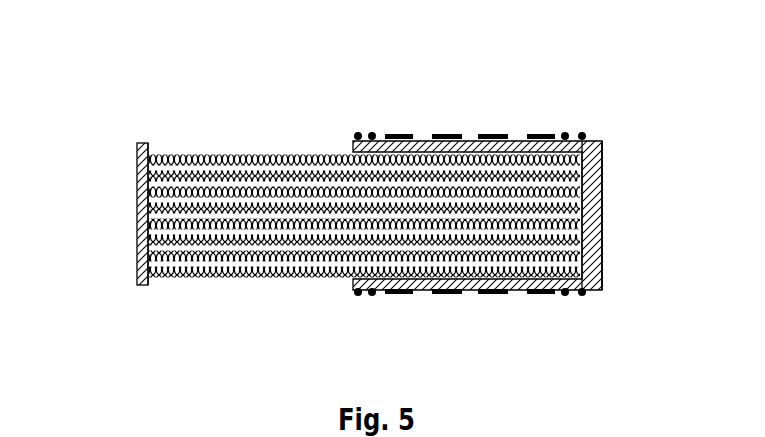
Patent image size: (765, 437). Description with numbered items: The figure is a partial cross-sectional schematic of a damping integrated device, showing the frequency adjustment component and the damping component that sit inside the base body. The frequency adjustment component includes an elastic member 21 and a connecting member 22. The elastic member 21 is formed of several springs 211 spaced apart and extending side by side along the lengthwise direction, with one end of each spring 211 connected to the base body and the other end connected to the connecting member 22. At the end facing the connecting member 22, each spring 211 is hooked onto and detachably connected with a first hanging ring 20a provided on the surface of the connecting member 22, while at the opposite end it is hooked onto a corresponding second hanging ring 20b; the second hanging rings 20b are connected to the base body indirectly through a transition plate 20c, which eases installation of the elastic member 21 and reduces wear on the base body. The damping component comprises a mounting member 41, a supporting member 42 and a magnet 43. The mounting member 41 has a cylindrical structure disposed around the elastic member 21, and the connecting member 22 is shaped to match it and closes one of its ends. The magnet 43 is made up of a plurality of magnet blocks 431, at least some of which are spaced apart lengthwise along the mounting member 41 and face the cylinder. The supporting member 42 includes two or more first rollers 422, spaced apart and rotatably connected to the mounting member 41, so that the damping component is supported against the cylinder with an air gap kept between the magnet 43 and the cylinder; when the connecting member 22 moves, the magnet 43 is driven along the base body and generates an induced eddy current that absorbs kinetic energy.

The first hanging ring 20a is at (603, 170).
The second hanging ring 20b is at (146, 172).
The transition plate 20c is at (146, 219).
The elastic member 21 is at (364, 266).
The spring 211 is at (273, 342).
The connecting member 22 is at (603, 220).
The mounting member 41 is at (467, 290).
The supporting member 42 is at (449, 169).
The first roller 422 is at (390, 76).
The magnet 43 is at (479, 168).
The magnet block 431 is at (553, 76).